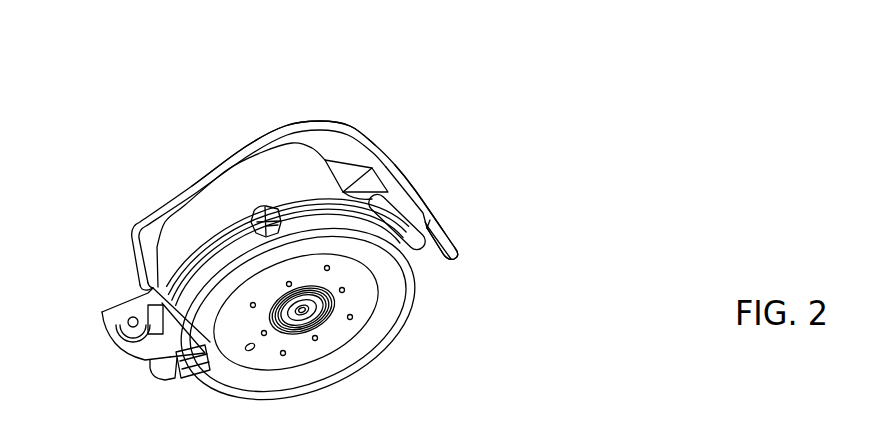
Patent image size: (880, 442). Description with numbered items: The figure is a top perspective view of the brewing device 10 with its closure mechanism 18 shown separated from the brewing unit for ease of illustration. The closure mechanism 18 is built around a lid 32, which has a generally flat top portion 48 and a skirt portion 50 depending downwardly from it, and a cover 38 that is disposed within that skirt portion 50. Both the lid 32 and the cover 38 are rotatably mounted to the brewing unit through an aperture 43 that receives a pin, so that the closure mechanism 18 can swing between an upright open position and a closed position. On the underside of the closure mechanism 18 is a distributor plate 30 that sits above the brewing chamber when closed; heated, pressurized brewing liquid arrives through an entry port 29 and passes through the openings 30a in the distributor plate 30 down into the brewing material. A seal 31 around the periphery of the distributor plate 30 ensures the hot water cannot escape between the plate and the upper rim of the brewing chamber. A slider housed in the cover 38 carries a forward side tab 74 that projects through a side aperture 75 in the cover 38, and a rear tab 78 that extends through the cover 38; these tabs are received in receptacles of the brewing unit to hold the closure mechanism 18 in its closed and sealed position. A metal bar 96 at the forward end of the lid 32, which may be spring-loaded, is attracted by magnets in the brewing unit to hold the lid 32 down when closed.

The brewing device 10 is at (645, 268).
The closure mechanism 18 is at (102, 77).
The entry port 29 is at (163, 367).
The distributor plate 30 is at (366, 304).
The openings 30a is at (285, 357).
The seal 31 is at (352, 362).
The lid 32 is at (158, 225).
The cover 38 is at (190, 297).
The aperture 43 is at (128, 318).
The top portion 48 is at (263, 137).
The skirt portion 50 is at (222, 217).
The tab 74 is at (268, 208).
The side aperture 75 is at (293, 210).
The rear tab 78 is at (191, 376).
The metal bar 96 is at (417, 253).